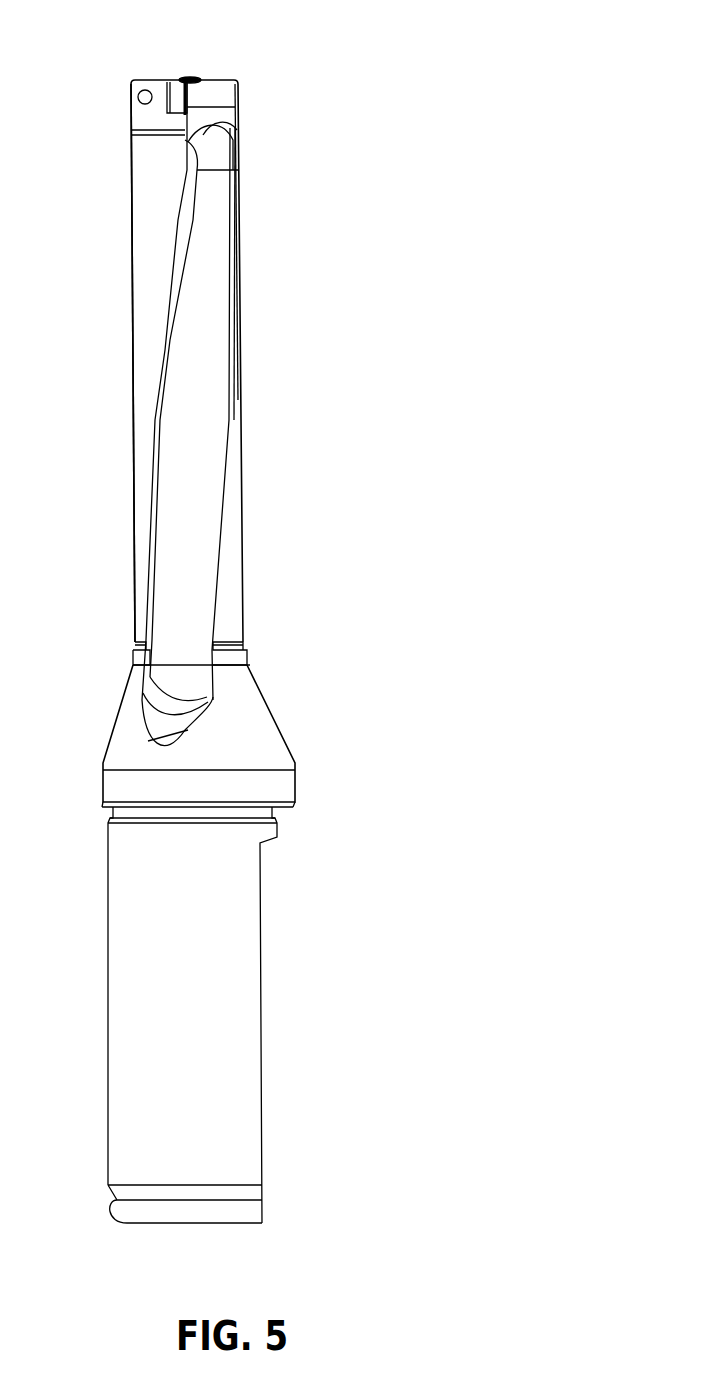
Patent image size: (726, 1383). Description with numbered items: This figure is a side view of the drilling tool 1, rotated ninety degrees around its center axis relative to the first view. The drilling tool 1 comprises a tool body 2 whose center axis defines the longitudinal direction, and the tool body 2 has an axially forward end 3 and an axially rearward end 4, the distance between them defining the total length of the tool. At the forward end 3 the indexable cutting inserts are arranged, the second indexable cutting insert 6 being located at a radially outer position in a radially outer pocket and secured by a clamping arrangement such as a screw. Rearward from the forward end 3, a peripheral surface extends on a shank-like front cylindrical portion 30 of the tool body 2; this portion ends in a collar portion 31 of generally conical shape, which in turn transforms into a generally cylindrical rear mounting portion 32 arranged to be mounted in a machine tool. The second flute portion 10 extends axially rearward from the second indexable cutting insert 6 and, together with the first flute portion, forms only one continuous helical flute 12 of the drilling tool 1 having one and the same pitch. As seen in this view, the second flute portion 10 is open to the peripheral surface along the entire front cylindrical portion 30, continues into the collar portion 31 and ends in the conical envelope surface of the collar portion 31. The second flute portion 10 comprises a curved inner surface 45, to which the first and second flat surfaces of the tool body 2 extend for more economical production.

The drilling tool 1 is at (340, 97).
The tool body 2 is at (232, 565).
The axially forward end 3 is at (138, 82).
The axially rearward end 4 is at (140, 1223).
The second indexable cutting insert 6 is at (178, 88).
The second flute portion 10 is at (212, 313).
The flute 12 is at (182, 478).
The front cylindrical portion 30 is at (145, 327).
The collar portion 31 is at (118, 737).
The rear mounting portion 32 is at (125, 995).
The curved inner surface 45 is at (208, 439).